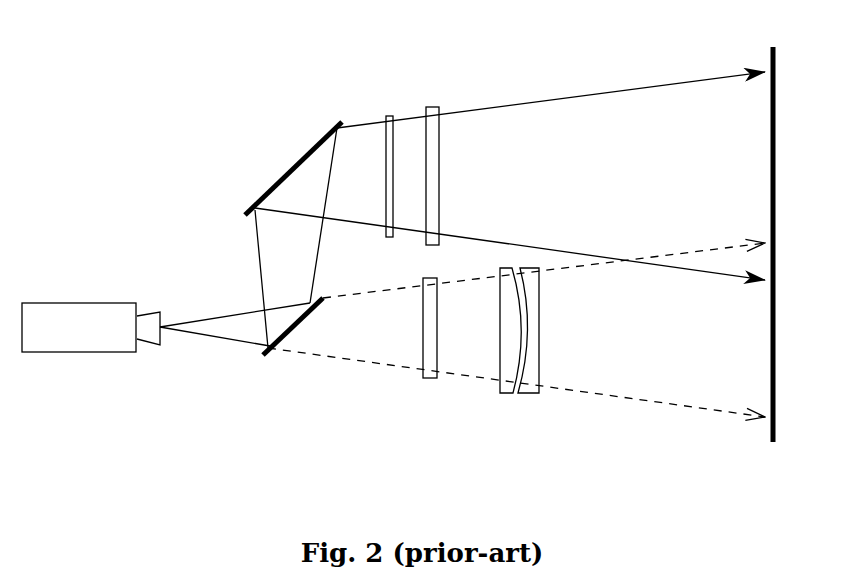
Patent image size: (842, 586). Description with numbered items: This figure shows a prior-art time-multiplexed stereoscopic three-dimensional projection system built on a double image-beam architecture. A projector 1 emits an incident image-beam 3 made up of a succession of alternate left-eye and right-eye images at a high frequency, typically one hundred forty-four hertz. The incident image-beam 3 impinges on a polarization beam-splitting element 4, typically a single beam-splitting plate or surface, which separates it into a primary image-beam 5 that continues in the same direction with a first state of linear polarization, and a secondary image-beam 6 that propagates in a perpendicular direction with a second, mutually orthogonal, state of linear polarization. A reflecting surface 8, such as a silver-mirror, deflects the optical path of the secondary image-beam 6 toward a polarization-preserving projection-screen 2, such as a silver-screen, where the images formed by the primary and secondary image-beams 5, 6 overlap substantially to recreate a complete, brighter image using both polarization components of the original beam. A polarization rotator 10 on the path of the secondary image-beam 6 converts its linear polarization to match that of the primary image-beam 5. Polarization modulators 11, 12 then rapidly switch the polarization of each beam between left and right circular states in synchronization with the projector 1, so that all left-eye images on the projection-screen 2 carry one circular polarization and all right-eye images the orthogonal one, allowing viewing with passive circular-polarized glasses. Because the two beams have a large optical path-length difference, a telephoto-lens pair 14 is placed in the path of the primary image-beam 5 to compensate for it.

The projector 1 is at (58, 297).
The polarization-preserving projection-screen 2 is at (785, 50).
The incident image-beam 3 is at (208, 313).
The polarization beam-splitting element 4 is at (270, 360).
The primary image-beam 5 is at (372, 372).
The secondary image-beam 6 is at (323, 263).
The reflecting surface 8 is at (250, 198).
The polarization rotator 10 is at (383, 113).
The polarization modulator 11 is at (437, 98).
The polarization modulator 12 is at (432, 388).
The telephoto-lens pair 14 is at (545, 332).